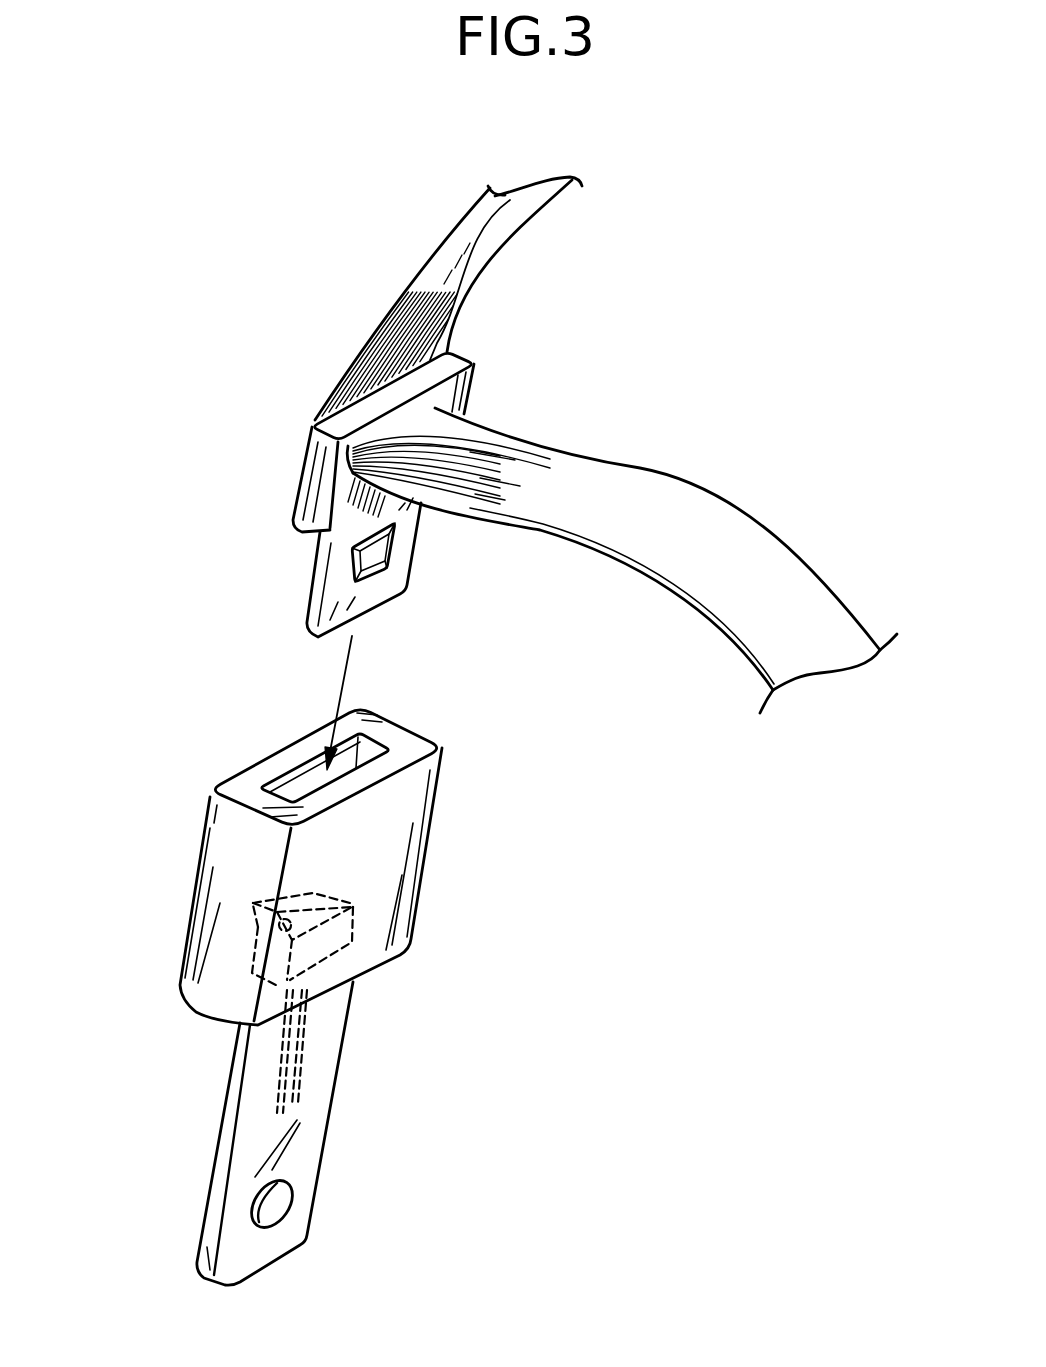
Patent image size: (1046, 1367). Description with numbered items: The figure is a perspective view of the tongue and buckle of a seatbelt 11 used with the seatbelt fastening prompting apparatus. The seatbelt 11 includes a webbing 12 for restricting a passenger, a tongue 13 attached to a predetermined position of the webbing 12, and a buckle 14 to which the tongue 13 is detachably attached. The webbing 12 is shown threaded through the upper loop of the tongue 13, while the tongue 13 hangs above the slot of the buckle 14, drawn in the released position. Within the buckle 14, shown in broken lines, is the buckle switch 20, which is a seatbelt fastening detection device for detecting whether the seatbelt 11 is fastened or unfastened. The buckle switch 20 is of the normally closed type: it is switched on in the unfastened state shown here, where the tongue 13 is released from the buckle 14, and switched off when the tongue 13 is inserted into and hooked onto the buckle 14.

The seatbelt 11 is at (712, 406).
The webbing 12 is at (752, 555).
The tongue 13 is at (393, 603).
The buckle 14 is at (190, 888).
The buckle switch 20 is at (353, 928).